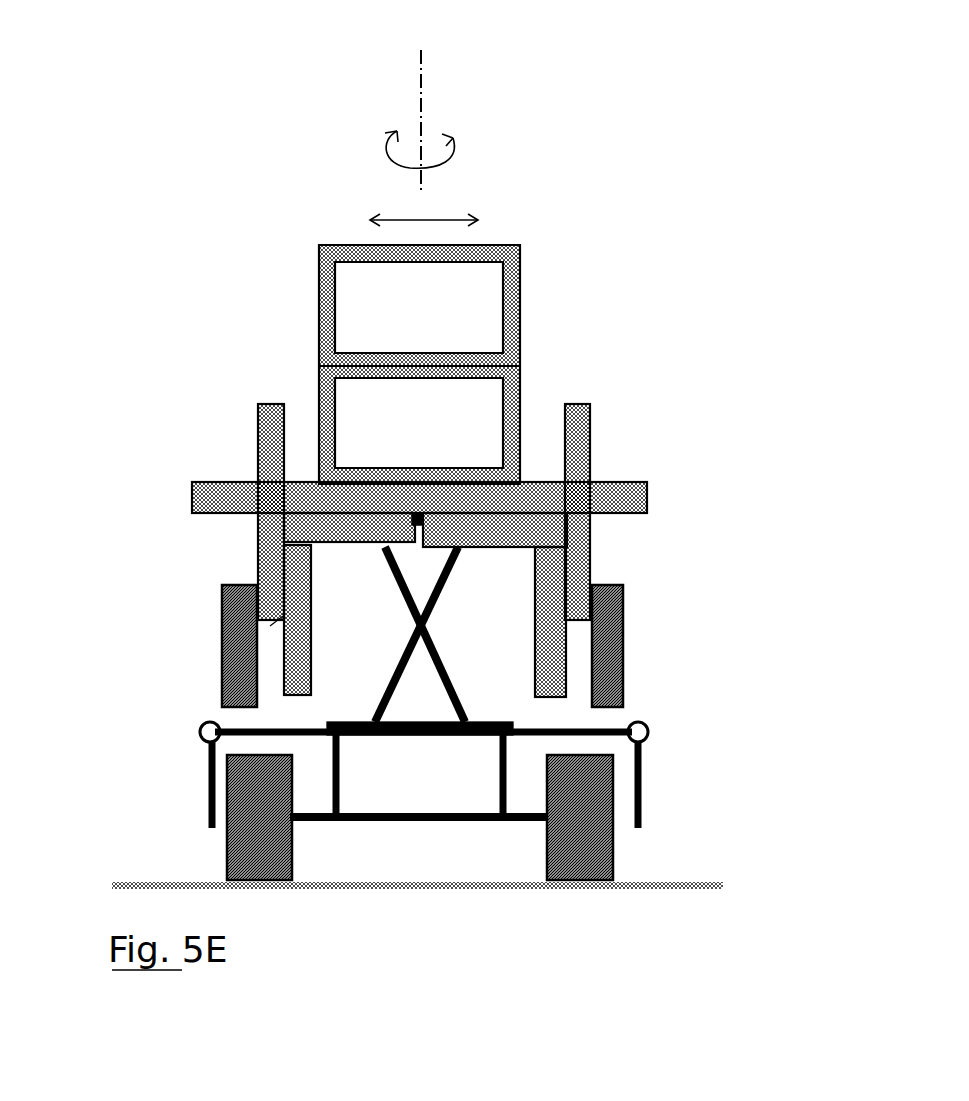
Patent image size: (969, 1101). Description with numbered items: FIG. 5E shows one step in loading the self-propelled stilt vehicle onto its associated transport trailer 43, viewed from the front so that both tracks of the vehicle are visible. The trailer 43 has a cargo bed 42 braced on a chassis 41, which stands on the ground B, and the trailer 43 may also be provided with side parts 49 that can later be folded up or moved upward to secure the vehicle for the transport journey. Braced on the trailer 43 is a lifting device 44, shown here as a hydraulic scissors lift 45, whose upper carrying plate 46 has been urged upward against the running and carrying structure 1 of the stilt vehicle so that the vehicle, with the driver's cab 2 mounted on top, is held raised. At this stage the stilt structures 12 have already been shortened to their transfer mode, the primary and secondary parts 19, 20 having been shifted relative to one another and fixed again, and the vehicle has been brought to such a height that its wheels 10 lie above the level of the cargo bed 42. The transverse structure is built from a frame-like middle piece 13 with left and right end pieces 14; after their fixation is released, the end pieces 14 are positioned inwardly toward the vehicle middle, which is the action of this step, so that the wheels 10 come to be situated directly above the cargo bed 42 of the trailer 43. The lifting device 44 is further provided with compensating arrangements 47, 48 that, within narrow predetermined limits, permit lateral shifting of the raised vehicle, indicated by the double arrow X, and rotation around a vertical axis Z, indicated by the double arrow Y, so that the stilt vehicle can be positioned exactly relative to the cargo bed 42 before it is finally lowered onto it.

The running and carrying structure 1 is at (411, 624).
The driver's cab 2 is at (527, 240).
The wheel 10 is at (391, 639).
The stilt structure 12 is at (222, 655).
The middle piece 13 is at (190, 482).
The end piece 14 is at (318, 528).
The primary part 19 is at (290, 670).
The secondary part 20 is at (256, 552).
The chassis 41 is at (540, 830).
The cargo bed 42 is at (607, 717).
The trailer 43 is at (645, 845).
The lifting device 44 is at (430, 540).
The hydraulic scissors lift 45 is at (468, 600).
The upper carrying plate 46 is at (420, 520).
The compensating arrangement 47 is at (340, 715).
The compensating arrangement 48 is at (425, 520).
The trailer side part 49 is at (645, 780).
The ground B is at (153, 882).
The lateral shifting double arrow X is at (440, 212).
The rotation double arrow Y is at (455, 160).
The vertical axis Z is at (421, 80).